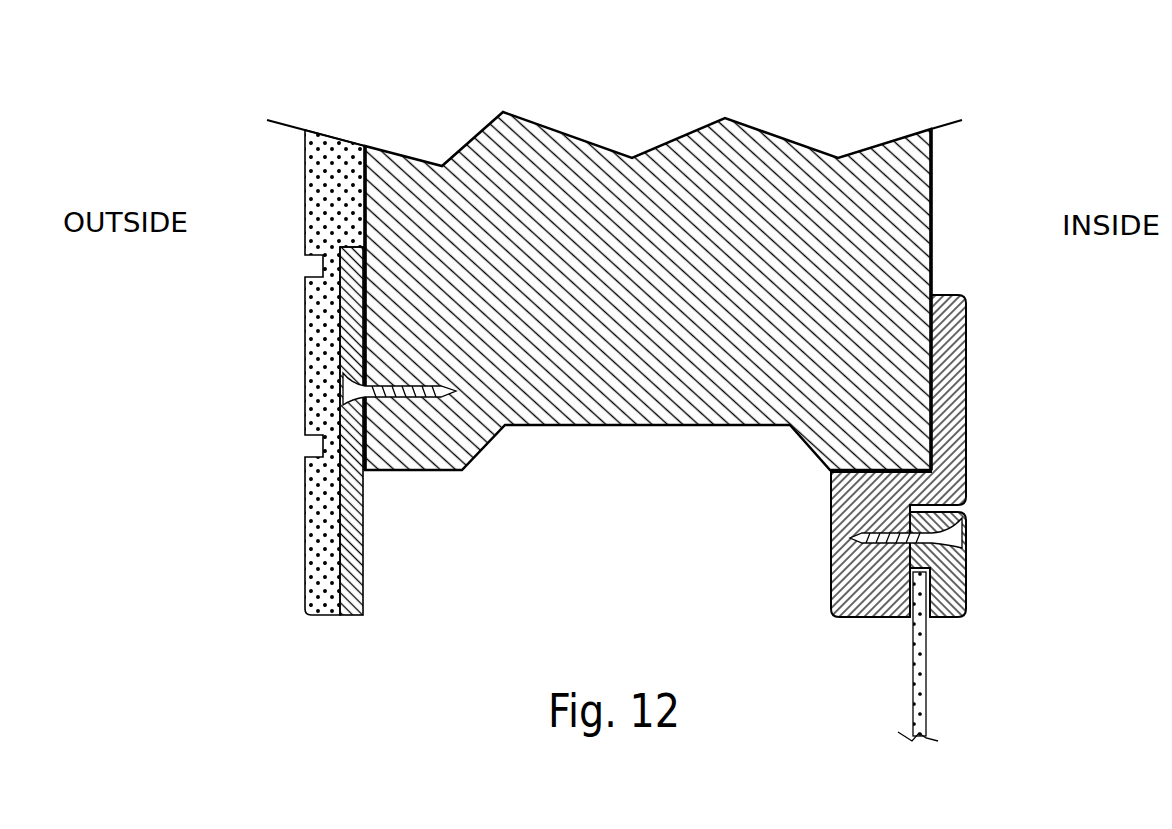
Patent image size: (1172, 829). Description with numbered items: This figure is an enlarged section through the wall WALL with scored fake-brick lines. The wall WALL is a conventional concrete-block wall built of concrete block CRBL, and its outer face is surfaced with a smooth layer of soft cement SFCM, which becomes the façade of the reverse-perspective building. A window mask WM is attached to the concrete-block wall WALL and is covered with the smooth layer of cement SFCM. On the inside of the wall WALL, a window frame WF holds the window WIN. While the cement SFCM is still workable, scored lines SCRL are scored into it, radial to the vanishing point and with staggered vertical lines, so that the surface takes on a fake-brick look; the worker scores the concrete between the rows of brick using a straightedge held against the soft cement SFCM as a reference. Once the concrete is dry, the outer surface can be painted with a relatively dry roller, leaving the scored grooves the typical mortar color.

The wall WALL is at (612, 383).
The concrete block CRBL is at (765, 165).
The scored lines SCRL is at (307, 445).
The soft cement SFCM is at (315, 493).
The window mask WM is at (363, 588).
The window frame WF is at (967, 353).
The window WIN is at (927, 667).